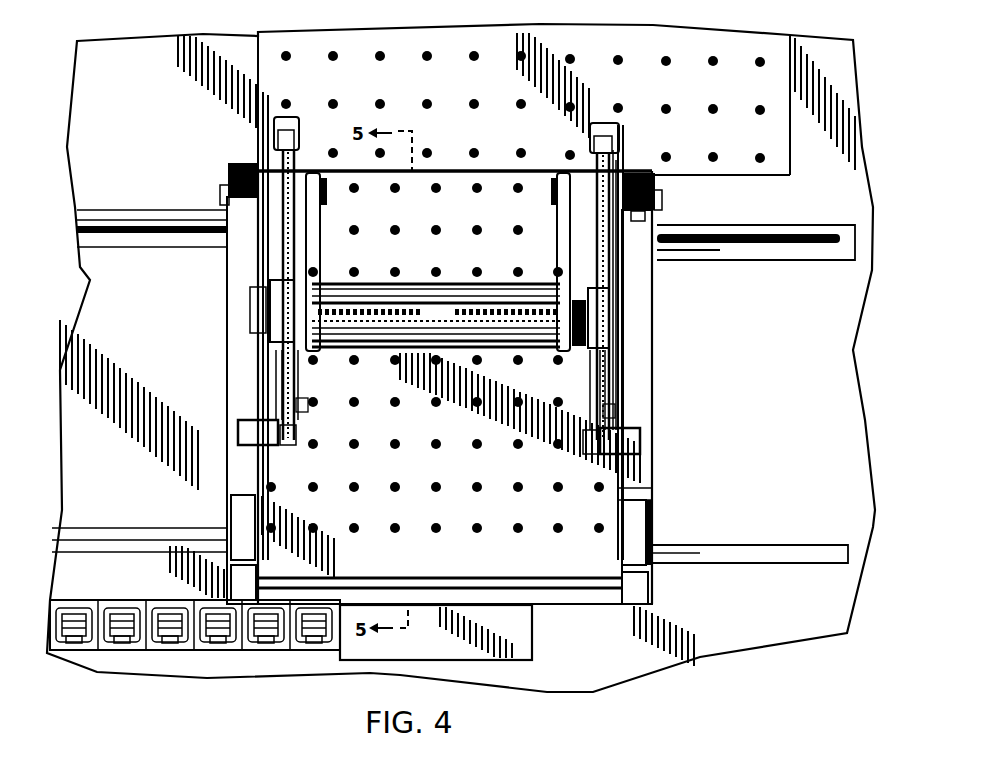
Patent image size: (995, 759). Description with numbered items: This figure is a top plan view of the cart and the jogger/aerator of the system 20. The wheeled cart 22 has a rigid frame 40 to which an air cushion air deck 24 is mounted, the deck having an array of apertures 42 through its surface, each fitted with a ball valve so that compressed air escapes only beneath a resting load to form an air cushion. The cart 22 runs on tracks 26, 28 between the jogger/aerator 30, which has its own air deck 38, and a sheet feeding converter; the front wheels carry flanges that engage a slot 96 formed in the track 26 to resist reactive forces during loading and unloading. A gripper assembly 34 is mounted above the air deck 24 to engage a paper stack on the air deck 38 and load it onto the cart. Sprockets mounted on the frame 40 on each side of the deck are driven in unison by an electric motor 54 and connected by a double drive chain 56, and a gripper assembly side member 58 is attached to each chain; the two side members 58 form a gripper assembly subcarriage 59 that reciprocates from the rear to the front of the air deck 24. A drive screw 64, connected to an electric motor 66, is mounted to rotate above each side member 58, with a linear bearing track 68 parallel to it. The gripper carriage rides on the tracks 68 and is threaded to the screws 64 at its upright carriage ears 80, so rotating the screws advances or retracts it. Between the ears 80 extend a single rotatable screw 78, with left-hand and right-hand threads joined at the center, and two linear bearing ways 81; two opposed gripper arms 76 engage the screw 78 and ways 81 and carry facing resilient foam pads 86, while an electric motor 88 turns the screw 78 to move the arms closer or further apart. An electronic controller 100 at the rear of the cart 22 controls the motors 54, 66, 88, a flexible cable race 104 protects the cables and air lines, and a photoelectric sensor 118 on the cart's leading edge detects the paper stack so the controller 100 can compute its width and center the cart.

The system 20 is at (750, 652).
The wheeled cart 22 is at (654, 463).
The air cushion air deck 24 is at (630, 490).
The track 26 is at (730, 225).
The track 28 is at (748, 545).
The jogger/aerator 30 is at (203, 109).
The gripper assembly 34 is at (634, 379).
The air deck 38 is at (693, 177).
The rigid frame 40 is at (655, 333).
The apertures 42 is at (712, 107).
The electric motor 54 is at (231, 505).
The double drive chain 56 is at (228, 175).
The gripper assembly side member 58 is at (273, 123).
The gripper assembly subcarriage 59 is at (290, 416).
The drive screw 64 is at (590, 168).
The electric motor 66 is at (642, 428).
The linear bearing track 68 is at (617, 258).
The gripper arms 76 is at (321, 243).
The rotatable screw 78 is at (503, 300).
The carriage ears 80 is at (612, 322).
The linear bearing ways 81 is at (420, 283).
The resilient foam pads 86 is at (326, 194).
The electric motor 88 is at (250, 306).
The slot 96 is at (780, 262).
The electronic controller 100 is at (534, 628).
The flexible cable race 104 is at (128, 600).
The photoelectric sensor 118 is at (640, 222).